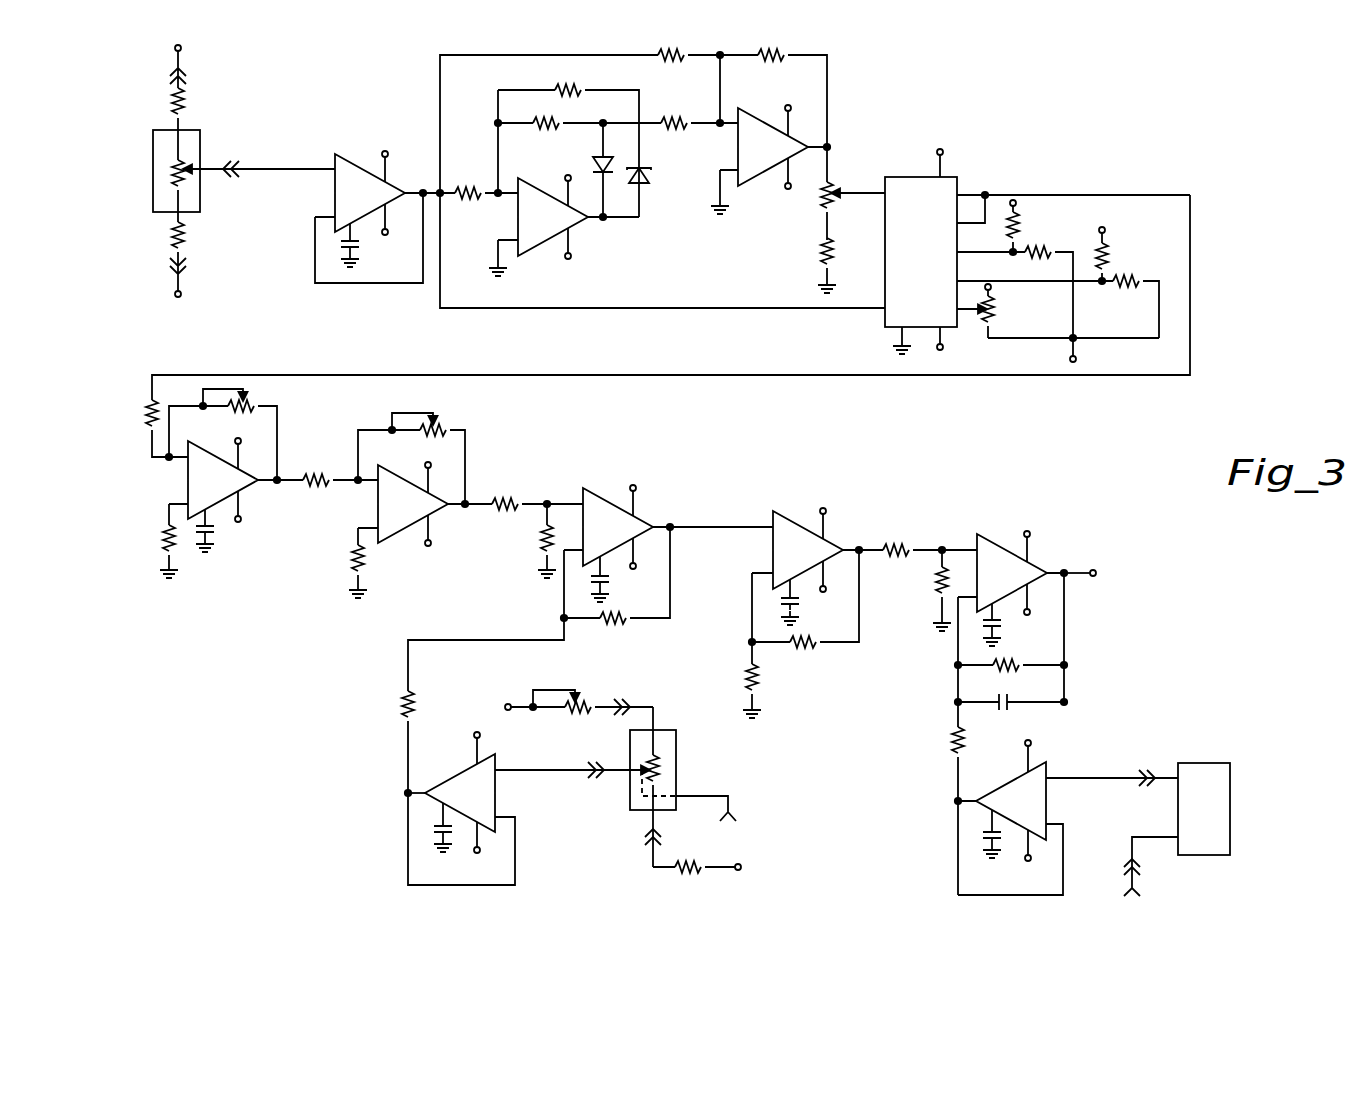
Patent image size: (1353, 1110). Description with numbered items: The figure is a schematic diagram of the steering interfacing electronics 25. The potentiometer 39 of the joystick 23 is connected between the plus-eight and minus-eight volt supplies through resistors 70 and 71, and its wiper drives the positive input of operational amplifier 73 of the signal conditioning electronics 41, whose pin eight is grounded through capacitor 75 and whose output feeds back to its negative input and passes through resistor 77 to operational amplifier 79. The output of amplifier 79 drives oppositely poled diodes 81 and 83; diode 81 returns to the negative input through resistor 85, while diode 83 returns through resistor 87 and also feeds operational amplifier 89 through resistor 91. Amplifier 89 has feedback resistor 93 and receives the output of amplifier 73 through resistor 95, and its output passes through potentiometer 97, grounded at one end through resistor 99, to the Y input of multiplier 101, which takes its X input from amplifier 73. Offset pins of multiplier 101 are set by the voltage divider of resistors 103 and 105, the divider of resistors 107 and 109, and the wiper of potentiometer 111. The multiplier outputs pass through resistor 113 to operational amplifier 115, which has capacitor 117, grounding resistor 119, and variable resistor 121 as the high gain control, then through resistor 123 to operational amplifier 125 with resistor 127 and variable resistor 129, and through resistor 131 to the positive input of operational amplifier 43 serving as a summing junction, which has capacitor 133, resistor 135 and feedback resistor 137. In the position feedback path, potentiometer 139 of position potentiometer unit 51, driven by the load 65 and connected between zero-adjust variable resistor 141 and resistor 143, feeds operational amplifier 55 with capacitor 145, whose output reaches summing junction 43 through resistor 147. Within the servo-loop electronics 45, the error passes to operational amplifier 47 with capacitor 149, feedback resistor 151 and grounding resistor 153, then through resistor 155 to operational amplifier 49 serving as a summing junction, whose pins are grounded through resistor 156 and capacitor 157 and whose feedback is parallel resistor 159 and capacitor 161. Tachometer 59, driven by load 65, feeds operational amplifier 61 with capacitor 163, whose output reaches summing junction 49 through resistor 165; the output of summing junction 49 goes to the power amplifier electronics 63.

The joystick 23 is at (200, 137).
The steering interfacing electronics 25 is at (412, 62).
The potentiometer 39 is at (178, 172).
The signal conditioning electronics 41 is at (915, 75).
The summing junction 43 is at (612, 487).
The servo-loop electronics 45 is at (855, 448).
The amplifier 47 is at (798, 515).
The summing junction 49 is at (1002, 535).
The position potentiometer 51 is at (676, 737).
The amplifier 55 is at (461, 772).
The tachometer 59 is at (1231, 766).
The amplifier 61 is at (1013, 784).
The power amplifier electronics 63 is at (1164, 574).
The load 65 is at (943, 859).
The resistor 70 is at (183, 102).
The resistor 71 is at (184, 237).
The operational amplifier 73 is at (358, 162).
The capacitor 75 is at (358, 250).
The resistor 77 is at (466, 200).
The operational amplifier 79 is at (520, 253).
The diode 81 is at (650, 178).
The diode 83 is at (600, 157).
The resistor 85 is at (571, 97).
The resistor 87 is at (547, 131).
The operational amplifier 89 is at (745, 184).
The resistor 91 is at (665, 118).
The resistor 93 is at (784, 52).
The resistor 95 is at (667, 58).
The potentiometer 97 is at (832, 204).
The resistor 99 is at (833, 254).
The multiplier 101 is at (906, 177).
The resistor 103 is at (1020, 229).
The resistor 105 is at (1042, 247).
The resistor 107 is at (1108, 262).
The resistor 109 is at (1133, 287).
The potentiometer 111 is at (996, 314).
The resistor 113 is at (146, 418).
The operational amplifier 115 is at (228, 444).
The capacitor 117 is at (212, 538).
The resistor 119 is at (163, 545).
The variable resistor 121 is at (255, 399).
The resistor 123 is at (338, 490).
The operational amplifier 125 is at (378, 542).
The resistor 127 is at (352, 567).
The variable resistor 129 is at (446, 415).
The resistor 131 is at (500, 499).
The capacitor 133 is at (607, 588).
The resistor 135 is at (540, 546).
The resistor 137 is at (612, 625).
The potentiometer 139 is at (646, 762).
The variable resistor 141 is at (570, 714).
The resistor 143 is at (695, 876).
The capacitor 145 is at (435, 836).
The resistor 147 is at (402, 709).
The capacitor 149 is at (800, 605).
The resistor 151 is at (803, 650).
The resistor 153 is at (748, 682).
The resistor 155 is at (911, 542).
The resistor 156 is at (934, 588).
The capacitor 157 is at (988, 624).
The resistor 159 is at (1003, 663).
The capacitor 161 is at (1008, 708).
The capacitor 163 is at (985, 840).
The resistor 165 is at (952, 745).